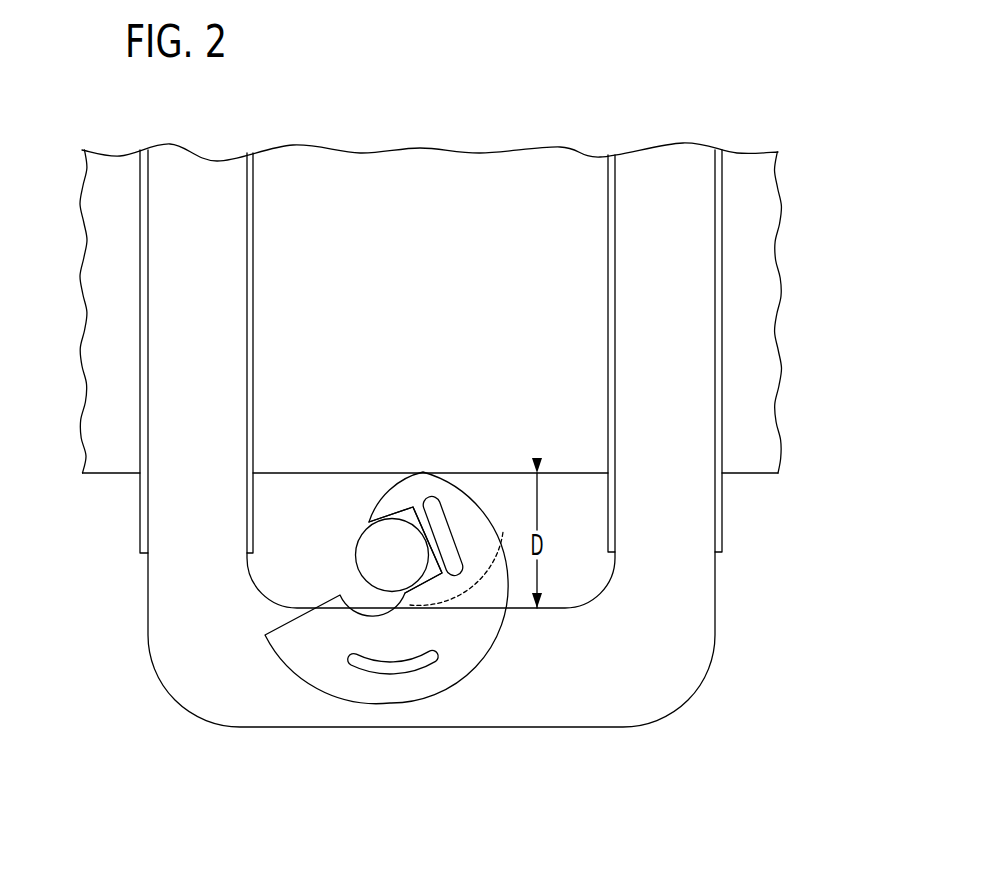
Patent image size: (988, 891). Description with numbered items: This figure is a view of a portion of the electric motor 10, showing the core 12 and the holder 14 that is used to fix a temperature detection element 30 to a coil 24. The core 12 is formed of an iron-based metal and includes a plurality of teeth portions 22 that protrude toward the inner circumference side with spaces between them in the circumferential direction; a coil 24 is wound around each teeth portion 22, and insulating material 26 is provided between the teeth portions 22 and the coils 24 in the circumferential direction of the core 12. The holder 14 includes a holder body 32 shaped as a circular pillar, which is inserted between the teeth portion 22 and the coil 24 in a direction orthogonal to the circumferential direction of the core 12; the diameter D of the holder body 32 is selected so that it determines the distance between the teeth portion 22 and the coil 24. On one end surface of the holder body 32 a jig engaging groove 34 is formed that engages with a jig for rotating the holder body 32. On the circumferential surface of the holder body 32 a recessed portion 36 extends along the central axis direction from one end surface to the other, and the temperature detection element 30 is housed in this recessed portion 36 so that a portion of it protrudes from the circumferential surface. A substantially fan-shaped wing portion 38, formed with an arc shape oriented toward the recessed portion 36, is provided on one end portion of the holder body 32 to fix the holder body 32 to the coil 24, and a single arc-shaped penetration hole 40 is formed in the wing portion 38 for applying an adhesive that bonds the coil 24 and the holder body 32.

The electric motor 10 is at (394, 91).
The core 12 is at (652, 130).
The holder 14 is at (371, 592).
The teeth portion 22 is at (573, 456).
The coil 24 is at (675, 685).
The insulating material 26 is at (144, 400).
The temperature detection element 30 is at (372, 549).
The holder body 32 is at (386, 582).
The jig engaging groove 34 is at (433, 500).
The recessed portion 36 is at (433, 574).
The wing portion 38 is at (418, 683).
The penetration hole 40 is at (373, 668).